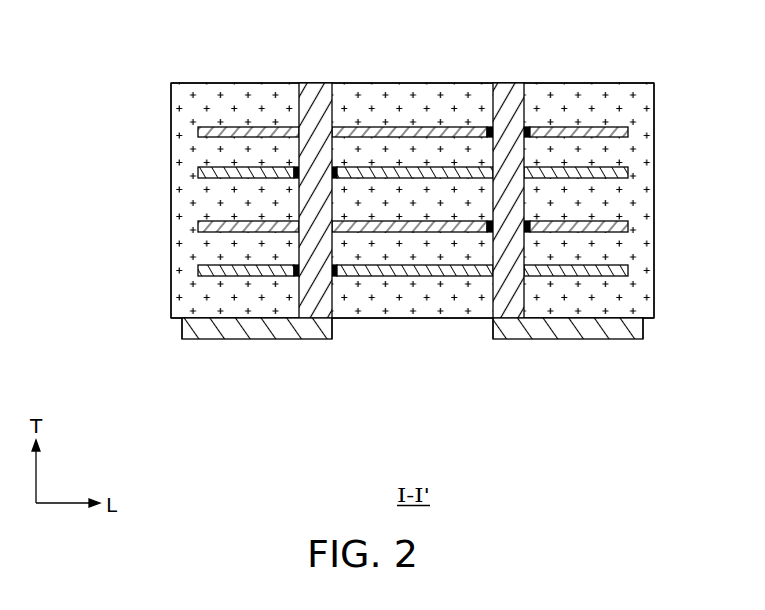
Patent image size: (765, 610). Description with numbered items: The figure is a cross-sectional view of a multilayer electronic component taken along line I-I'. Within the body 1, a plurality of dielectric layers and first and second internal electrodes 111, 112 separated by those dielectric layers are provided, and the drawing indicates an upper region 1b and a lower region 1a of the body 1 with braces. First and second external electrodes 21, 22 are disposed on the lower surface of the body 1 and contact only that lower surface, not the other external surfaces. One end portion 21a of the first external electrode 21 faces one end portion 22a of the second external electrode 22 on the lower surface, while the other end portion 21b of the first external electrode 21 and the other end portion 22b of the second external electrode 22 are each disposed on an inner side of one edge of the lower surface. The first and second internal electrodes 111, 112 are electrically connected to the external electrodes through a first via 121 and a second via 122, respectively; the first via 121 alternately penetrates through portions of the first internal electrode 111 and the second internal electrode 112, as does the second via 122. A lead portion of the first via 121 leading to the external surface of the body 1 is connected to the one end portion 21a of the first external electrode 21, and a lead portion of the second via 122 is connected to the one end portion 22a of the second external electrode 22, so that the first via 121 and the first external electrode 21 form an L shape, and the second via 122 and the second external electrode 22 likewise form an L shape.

The body 1 is at (459, 200).
The active region 1a is at (713, 93).
The cover region 1b is at (660, 83).
The first internal electrode 111 is at (200, 134).
The second internal electrode 112 is at (200, 177).
The first via 121 is at (316, 132).
The second via 122 is at (511, 132).
The first external electrode 21 is at (270, 363).
The one end portion of the first external electrode 21a is at (332, 327).
The other end portion of the first external electrode 21b is at (182, 329).
The second external electrode 22 is at (558, 363).
The one end portion of the second external electrode 22a is at (493, 327).
The other end portion of the second external electrode 22b is at (643, 327).